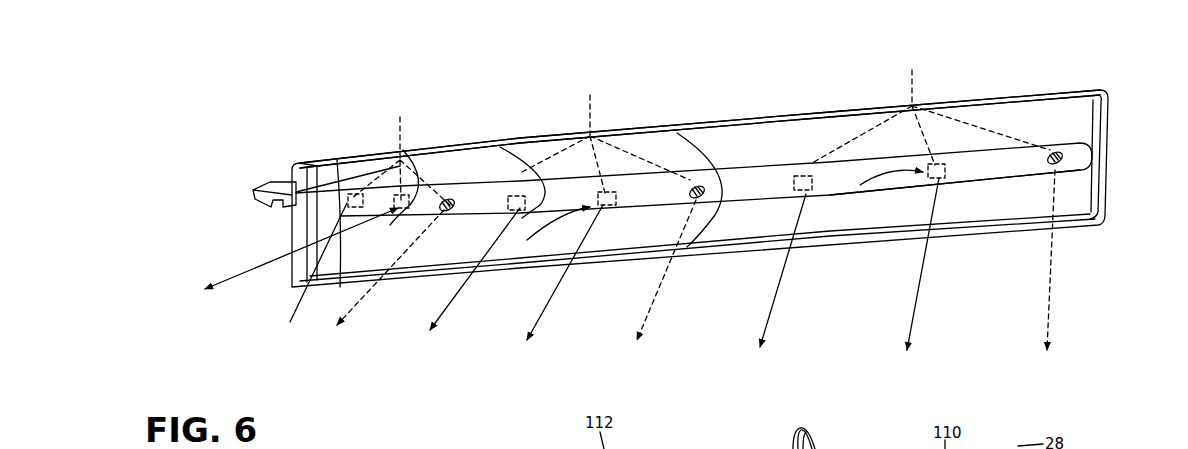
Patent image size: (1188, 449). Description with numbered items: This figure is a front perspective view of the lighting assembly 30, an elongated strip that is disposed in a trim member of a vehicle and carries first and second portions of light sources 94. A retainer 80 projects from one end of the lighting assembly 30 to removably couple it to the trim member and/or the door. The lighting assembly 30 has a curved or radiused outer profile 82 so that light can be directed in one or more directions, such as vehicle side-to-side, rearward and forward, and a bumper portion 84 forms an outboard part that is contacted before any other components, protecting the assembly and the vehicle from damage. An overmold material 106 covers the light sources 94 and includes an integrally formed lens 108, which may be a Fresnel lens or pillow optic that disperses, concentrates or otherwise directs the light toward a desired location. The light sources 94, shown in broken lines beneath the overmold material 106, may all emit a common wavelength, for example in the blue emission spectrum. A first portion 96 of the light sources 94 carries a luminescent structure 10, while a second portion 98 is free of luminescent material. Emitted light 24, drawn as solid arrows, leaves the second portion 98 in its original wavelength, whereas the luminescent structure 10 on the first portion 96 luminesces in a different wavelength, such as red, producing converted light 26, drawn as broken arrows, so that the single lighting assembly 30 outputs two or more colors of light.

The luminescent structure 10 is at (463, 212).
The emitted light 24 is at (237, 272).
The converted light 26 is at (361, 300).
The lighting assembly 30 is at (647, 124).
The retainer 80 is at (253, 192).
The curved or radiused outer profile 82 is at (304, 273).
The bumper portion 84 is at (992, 186).
The light sources 94 is at (701, 125).
The first portion of light sources 96 is at (458, 224).
The second portion of light sources 98 is at (530, 216).
The overmold material 106 is at (765, 146).
The lens 108 is at (484, 178).